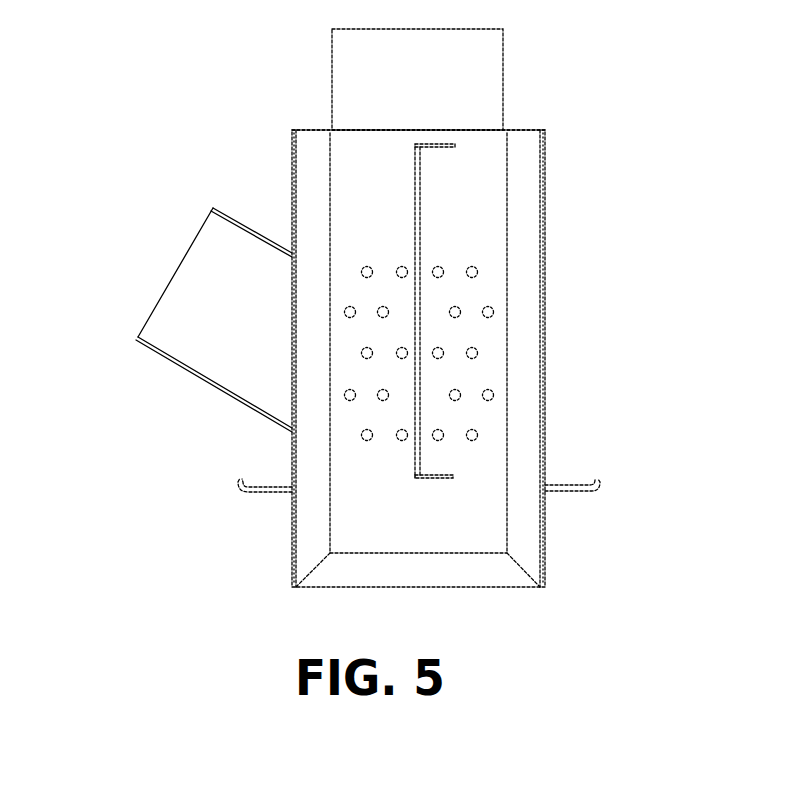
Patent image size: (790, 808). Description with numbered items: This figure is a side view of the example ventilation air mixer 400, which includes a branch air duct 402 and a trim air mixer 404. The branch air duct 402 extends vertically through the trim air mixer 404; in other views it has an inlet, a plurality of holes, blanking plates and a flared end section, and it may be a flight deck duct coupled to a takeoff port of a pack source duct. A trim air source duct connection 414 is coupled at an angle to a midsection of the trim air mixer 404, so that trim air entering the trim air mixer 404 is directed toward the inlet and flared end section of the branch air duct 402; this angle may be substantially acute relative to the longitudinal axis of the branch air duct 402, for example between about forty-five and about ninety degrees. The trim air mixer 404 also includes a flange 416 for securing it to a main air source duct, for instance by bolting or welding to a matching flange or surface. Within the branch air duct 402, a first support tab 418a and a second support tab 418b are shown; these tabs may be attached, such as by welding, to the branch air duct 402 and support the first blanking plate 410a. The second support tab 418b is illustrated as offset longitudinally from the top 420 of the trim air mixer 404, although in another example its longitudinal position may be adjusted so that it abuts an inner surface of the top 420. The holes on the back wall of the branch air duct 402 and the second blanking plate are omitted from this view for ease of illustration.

The ventilation air mixer 400 is at (146, 115).
The branch air duct 402 is at (503, 45).
The trim air mixer 404 is at (545, 298).
The first blanking plate 410a is at (420, 210).
The trim air source duct connection 414 is at (200, 233).
The flange 416 is at (592, 490).
The first support tab 418a is at (435, 479).
The second support tab 418b is at (432, 147).
The top of the trim air mixer 420 is at (522, 130).